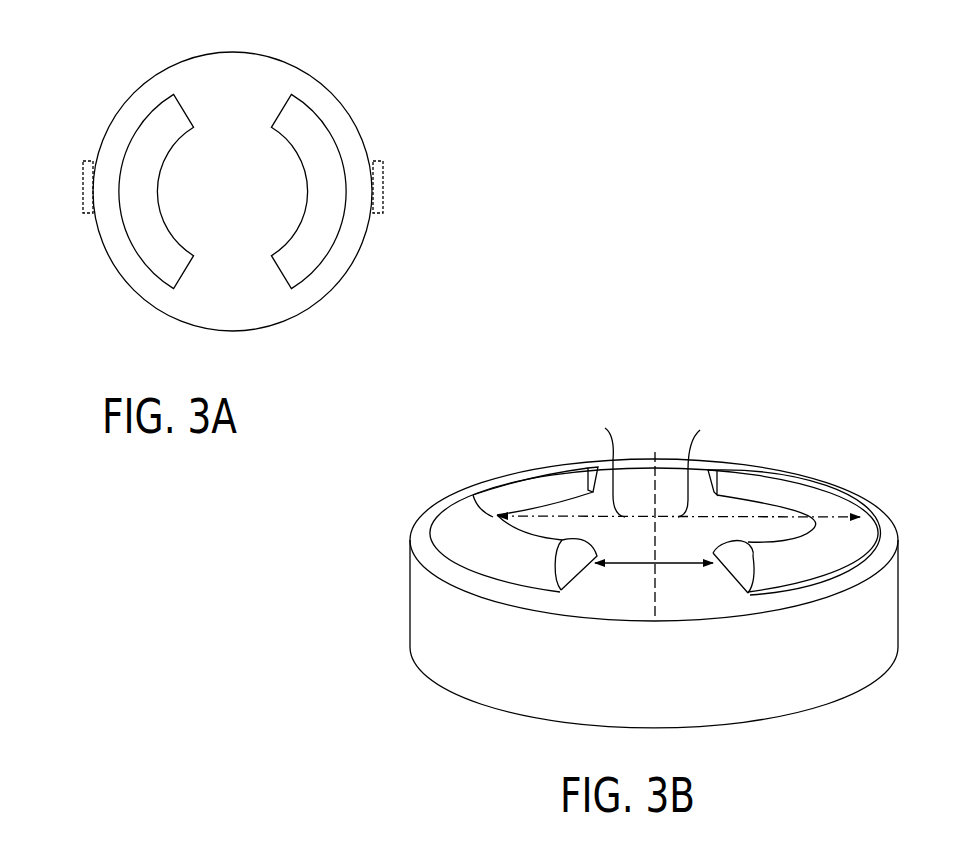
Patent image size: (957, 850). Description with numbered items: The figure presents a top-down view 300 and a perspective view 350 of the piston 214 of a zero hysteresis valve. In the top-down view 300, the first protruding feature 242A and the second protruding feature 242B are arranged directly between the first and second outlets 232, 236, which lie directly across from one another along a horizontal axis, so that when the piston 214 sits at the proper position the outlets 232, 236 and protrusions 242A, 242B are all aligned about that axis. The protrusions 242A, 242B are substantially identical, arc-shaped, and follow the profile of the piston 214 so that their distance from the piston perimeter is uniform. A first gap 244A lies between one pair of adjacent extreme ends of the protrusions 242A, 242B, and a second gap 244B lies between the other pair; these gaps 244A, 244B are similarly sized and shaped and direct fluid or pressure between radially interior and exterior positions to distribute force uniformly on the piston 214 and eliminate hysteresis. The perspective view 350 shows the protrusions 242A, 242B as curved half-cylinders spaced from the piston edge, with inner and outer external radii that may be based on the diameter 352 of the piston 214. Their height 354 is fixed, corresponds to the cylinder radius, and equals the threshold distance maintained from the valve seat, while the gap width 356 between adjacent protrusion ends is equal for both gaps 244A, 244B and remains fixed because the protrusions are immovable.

In FIG. 3A, the top-down view 300 is at (400, 25).
In FIG. 3B, the perspective view 350 is at (812, 425).
In FIG. 3A, the piston 214 is at (252, 207).
In FIG. 3B, the piston 214 is at (490, 656).
In FIG. 3A, the first protruding feature 242A is at (120, 167).
In FIG. 3A, the second protruding feature 242B is at (345, 165).
In FIG. 3A, the first gap 244A is at (227, 297).
In FIG. 3B, the first gap 244A is at (608, 579).
In FIG. 3A, the second gap 244B is at (228, 88).
In FIG. 3B, the second gap 244B is at (633, 478).
In FIG. 3A, the first outlet 232 is at (83, 187).
In FIG. 3A, the second outlet 236 is at (383, 186).
In FIG. 3B, the diameter 352 is at (655, 599).
In FIG. 3B, the height 354 is at (572, 543).
In FIG. 3B, the gap width 356 is at (600, 563).